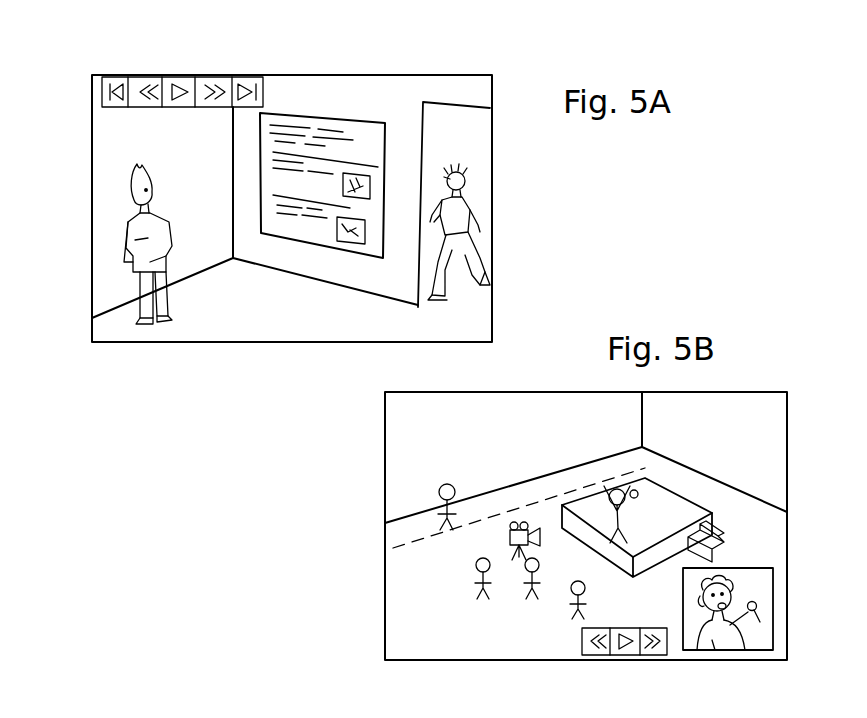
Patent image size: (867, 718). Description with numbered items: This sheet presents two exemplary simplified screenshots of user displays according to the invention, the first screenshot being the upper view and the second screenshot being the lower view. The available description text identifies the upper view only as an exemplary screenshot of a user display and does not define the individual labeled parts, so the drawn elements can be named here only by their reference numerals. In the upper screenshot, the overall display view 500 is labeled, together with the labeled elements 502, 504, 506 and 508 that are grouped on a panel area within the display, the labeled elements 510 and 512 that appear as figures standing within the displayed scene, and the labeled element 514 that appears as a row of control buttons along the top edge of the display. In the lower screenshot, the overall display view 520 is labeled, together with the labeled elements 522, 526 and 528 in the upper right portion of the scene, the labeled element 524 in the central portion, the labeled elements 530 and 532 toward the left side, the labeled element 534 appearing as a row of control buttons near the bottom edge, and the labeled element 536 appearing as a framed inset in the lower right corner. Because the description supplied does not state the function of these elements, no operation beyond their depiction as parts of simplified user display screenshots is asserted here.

In FIG. 5A, the virtual environment display view 500 is at (432, 70).
In FIG. 5A, the virtual display board 502 is at (334, 201).
In FIG. 5A, the image content region 504 is at (373, 115).
In FIG. 5A, the text content region 506 is at (290, 228).
In FIG. 5A, the second image content region 508 is at (363, 242).
In FIG. 5A, the first avatar 510 is at (140, 306).
In FIG. 5A, the second avatar 512 is at (473, 197).
In FIG. 5A, the playback control toolbar 514 is at (122, 108).
In FIG. 5B, the virtual environment display view 520 is at (385, 600).
In FIG. 5B, the virtual floor 522 is at (697, 503).
In FIG. 5B, the virtual camera 524 is at (520, 523).
In FIG. 5B, the virtual stage 526 is at (630, 528).
In FIG. 5B, the performer avatar 528 is at (615, 490).
In FIG. 5B, the audience avatar 530 is at (438, 487).
In FIG. 5B, the boundary line 532 is at (400, 533).
In FIG. 5B, the playback control toolbar 534 is at (580, 643).
In FIG. 5B, the video inset window 536 is at (757, 648).